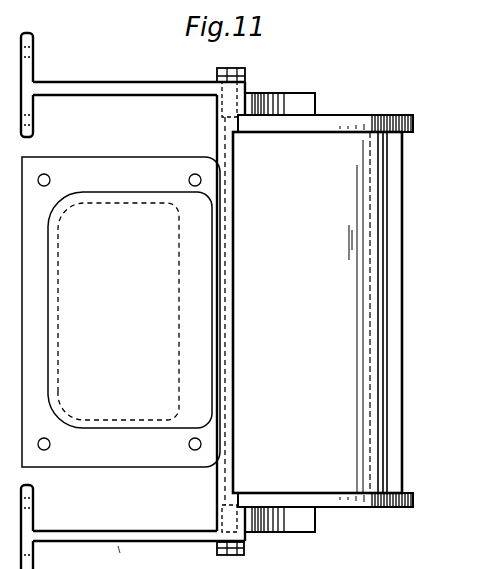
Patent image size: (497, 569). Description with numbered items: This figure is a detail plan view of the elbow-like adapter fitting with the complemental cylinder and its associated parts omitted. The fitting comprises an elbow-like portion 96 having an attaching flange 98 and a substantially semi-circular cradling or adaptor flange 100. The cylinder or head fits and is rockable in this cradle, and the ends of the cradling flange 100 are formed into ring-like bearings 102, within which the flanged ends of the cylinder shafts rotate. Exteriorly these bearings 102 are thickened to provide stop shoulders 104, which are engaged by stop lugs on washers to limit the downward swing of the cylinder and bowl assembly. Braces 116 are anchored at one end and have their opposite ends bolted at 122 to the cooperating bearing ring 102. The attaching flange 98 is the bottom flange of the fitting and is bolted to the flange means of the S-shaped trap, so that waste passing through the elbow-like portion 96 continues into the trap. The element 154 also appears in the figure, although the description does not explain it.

The mounting bracket arm 116 is at (93, 90).
The mounting plate 98 is at (77, 179).
The opening 96 is at (134, 210).
The bolt 122 is at (242, 73).
The boss 104 is at (297, 95).
The end plate 102 is at (340, 122).
The housing 100 is at (395, 251).
The lower bracket 154 is at (125, 557).